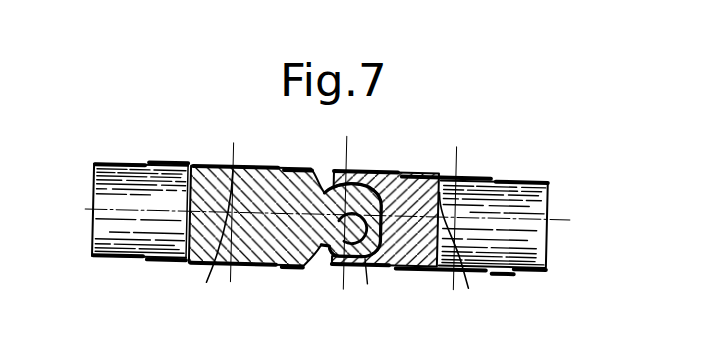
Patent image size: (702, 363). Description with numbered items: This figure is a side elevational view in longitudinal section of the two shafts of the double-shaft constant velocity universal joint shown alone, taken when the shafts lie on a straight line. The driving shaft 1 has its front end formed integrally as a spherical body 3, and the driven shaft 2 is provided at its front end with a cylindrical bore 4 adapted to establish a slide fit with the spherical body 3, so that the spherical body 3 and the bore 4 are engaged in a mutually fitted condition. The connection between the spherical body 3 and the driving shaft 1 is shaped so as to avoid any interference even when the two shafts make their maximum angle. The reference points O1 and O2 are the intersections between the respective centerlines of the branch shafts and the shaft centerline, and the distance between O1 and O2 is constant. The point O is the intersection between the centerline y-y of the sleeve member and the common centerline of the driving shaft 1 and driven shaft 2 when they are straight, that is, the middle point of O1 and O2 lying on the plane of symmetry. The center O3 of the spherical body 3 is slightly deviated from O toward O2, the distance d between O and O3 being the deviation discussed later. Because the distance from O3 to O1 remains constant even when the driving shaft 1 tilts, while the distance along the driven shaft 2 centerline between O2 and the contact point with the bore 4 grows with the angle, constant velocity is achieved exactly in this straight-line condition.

The driving shaft 1 is at (128, 167).
The driven shaft 2 is at (532, 178).
The spherical body 3 is at (343, 184).
The bore 4 is at (379, 187).
The intersection point O is at (346, 221).
The intersection point O1 is at (215, 226).
The intersection point O2 is at (462, 226).
The center of the spherical body O3 is at (373, 285).
The distance d is at (348, 230).